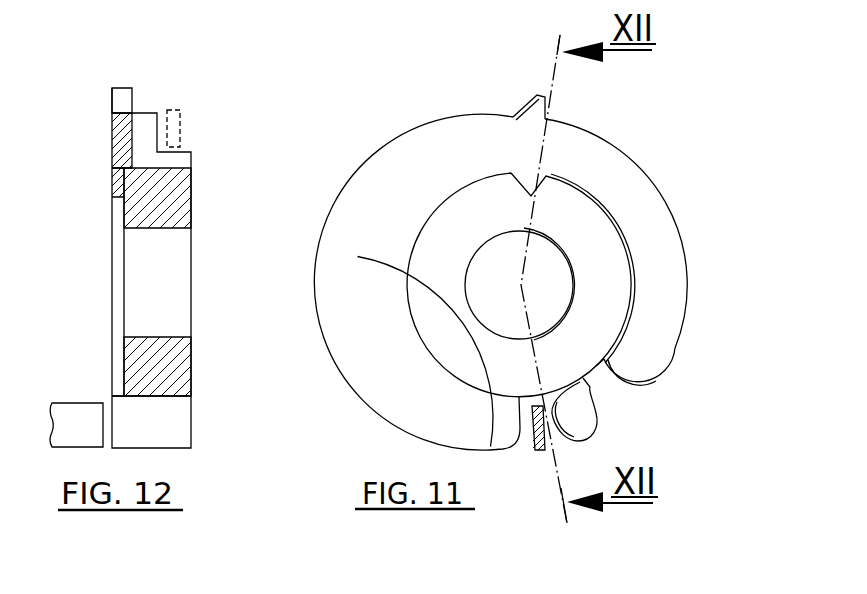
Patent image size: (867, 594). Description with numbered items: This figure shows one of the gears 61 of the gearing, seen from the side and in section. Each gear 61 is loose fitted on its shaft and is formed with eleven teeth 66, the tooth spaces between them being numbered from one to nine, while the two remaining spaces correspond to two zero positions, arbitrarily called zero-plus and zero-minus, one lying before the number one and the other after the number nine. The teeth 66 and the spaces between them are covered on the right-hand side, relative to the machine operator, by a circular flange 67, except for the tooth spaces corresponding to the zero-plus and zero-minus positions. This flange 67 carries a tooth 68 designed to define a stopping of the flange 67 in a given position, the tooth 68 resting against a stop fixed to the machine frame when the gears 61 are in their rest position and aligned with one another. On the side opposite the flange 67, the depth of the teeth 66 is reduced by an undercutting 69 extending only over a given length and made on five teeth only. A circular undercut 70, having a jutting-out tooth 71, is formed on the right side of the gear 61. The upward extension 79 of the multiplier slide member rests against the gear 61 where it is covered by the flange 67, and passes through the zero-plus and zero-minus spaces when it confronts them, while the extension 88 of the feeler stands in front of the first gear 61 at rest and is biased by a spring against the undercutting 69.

In FIG. 12, the gear 61 is at (250, 198).
In FIG. 11, the gear 61 is at (700, 160).
In FIG. 12, the teeth 66 is at (148, 115).
In FIG. 11, the teeth 66 is at (586, 423).
In FIG. 12, the circular flange 67 is at (118, 142).
In FIG. 11, the circular flange 67 is at (452, 134).
In FIG. 12, the tooth 68 is at (125, 88).
In FIG. 11, the tooth 68 is at (544, 100).
In FIG. 12, the undercutting 69 is at (182, 160).
In FIG. 12, the circular undercut 70 is at (118, 213).
In FIG. 11, the circular undercut 70 is at (452, 343).
In FIG. 12, the jutting-out tooth 71 is at (118, 178).
In FIG. 11, the jutting-out tooth 71 is at (540, 184).
In FIG. 12, the upward extension 79 is at (62, 412).
In FIG. 11, the upward extension 79 is at (535, 445).
In FIG. 12, the extension 88 is at (174, 127).